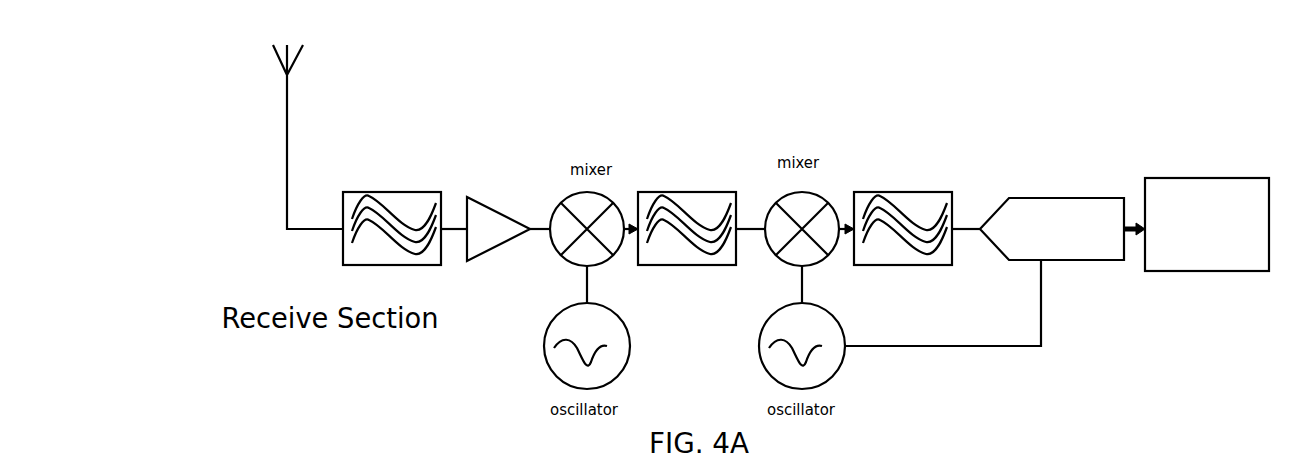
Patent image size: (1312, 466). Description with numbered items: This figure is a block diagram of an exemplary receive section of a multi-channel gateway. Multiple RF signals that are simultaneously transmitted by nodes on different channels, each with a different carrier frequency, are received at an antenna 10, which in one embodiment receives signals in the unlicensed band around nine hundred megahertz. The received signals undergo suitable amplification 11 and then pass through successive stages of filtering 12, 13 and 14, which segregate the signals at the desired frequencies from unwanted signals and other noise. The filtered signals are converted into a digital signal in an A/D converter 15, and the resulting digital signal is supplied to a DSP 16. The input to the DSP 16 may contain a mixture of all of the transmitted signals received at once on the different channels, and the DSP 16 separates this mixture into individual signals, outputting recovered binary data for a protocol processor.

The antenna 10 is at (263, 75).
The amplification 11 is at (497, 143).
The filtering 12 is at (391, 182).
The filtering 13 is at (684, 177).
The filtering 14 is at (905, 177).
The A/D converter 15 is at (1072, 185).
The DSP 16 is at (1193, 154).